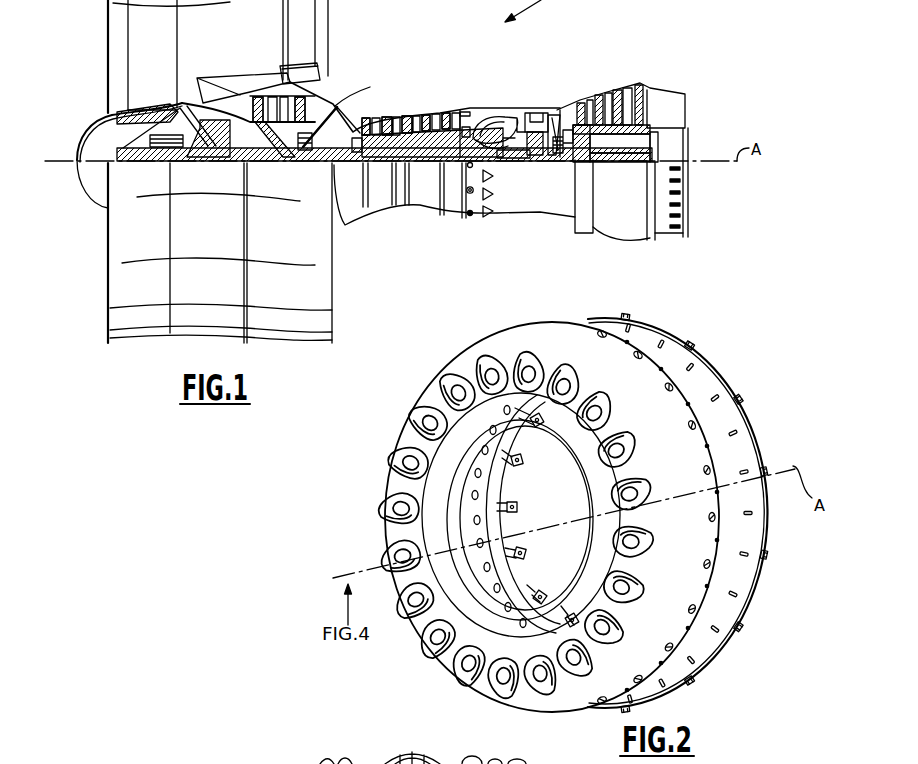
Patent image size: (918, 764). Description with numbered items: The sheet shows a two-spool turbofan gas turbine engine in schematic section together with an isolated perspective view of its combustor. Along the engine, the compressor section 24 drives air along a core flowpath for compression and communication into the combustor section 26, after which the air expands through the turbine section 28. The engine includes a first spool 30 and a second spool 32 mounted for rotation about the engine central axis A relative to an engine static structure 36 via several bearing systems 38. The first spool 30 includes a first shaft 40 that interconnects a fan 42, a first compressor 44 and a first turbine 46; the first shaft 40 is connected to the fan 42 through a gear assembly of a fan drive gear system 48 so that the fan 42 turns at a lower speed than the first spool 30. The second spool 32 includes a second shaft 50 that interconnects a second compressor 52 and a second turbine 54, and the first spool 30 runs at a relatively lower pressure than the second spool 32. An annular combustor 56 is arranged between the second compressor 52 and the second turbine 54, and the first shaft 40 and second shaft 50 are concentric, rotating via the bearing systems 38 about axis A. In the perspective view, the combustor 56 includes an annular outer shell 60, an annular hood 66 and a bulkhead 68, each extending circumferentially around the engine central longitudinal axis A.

In FIG. 1, the compressor section 24 is at (370, 87).
In FIG. 1, the combustor section 26 is at (498, 92).
In FIG. 1, the turbine section 28 is at (591, 69).
In FIG. 1, the first spool 30 is at (425, 178).
In FIG. 1, the second spool 32 is at (455, 115).
In FIG. 1, the engine static structure 36 is at (452, 227).
In FIG. 1, the bearing systems 38 is at (307, 157).
In FIG. 1, the first shaft 40 is at (341, 163).
In FIG. 1, the fan 42 is at (168, 68).
In FIG. 1, the first compressor 44 is at (318, 68).
In FIG. 1, the first turbine 46 is at (617, 87).
In FIG. 1, the fan drive gear system 48 is at (222, 157).
In FIG. 1, the second shaft 50 is at (503, 160).
In FIG. 1, the second compressor 52 is at (407, 118).
In FIG. 1, the second turbine 54 is at (533, 115).
In FIG. 1, the annular combustor 56 is at (498, 120).
In FIG. 2, the annular combustor 56 is at (399, 651).
In FIG. 2, the annular outer shell 60 is at (648, 337).
In FIG. 2, the annular hood 66 is at (472, 347).
In FIG. 2, the bulkhead 68 is at (250, 755).